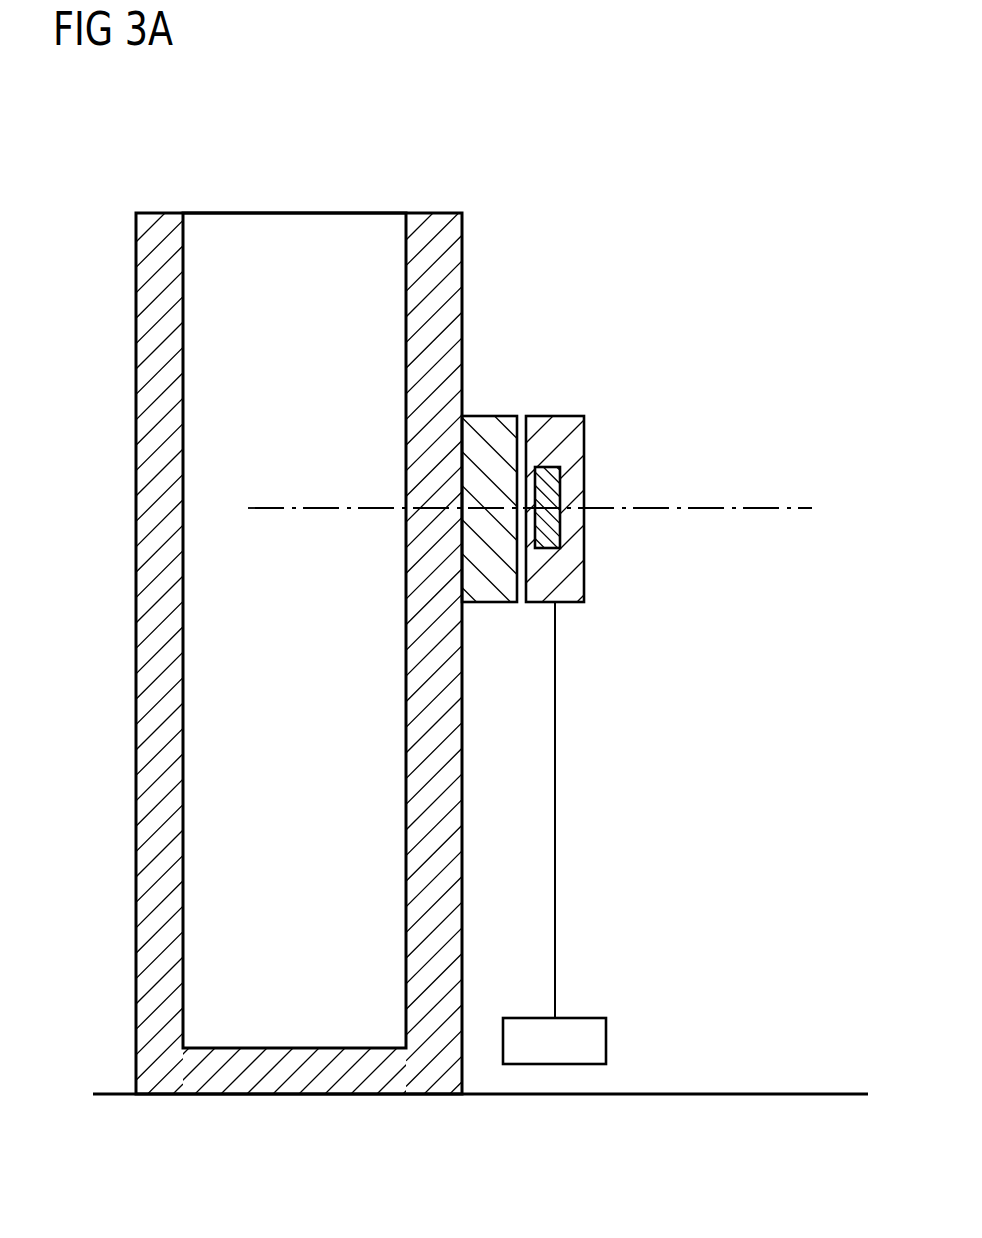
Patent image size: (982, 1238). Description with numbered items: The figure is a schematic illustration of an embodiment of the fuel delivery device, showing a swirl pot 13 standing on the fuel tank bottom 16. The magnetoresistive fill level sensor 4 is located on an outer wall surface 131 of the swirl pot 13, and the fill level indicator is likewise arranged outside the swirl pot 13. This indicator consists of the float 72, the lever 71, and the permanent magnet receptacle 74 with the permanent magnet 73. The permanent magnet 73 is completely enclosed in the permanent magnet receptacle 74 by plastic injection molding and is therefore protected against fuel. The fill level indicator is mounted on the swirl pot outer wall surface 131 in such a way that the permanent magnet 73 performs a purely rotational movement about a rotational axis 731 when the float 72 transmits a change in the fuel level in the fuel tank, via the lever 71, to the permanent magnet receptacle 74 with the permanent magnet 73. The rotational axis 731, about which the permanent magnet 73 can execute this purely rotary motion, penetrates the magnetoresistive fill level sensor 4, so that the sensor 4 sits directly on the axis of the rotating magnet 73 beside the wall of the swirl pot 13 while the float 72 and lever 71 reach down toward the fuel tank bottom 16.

The swirl pot 13 is at (496, 195).
The outer wall surface 131 is at (462, 257).
The magnetoresistive fill level sensor 4 is at (485, 416).
The rotational axis 731 is at (800, 508).
The permanent magnet 73 is at (560, 535).
The permanent magnet receptacle 74 is at (584, 567).
The lever 71 is at (555, 810).
The float 72 is at (606, 1041).
The fuel tank bottom 16 is at (793, 1094).